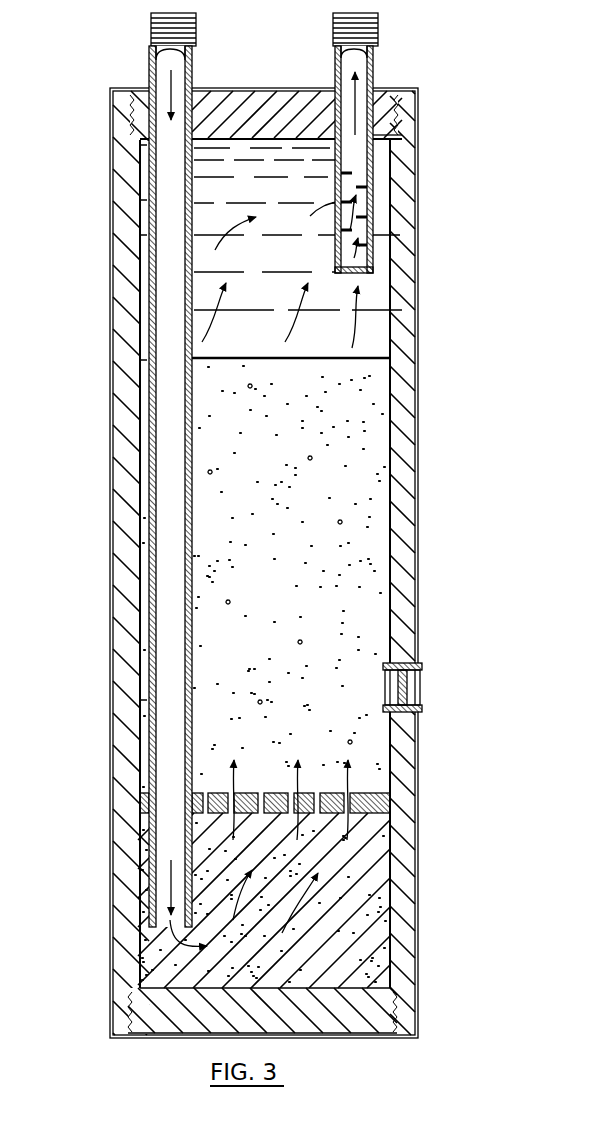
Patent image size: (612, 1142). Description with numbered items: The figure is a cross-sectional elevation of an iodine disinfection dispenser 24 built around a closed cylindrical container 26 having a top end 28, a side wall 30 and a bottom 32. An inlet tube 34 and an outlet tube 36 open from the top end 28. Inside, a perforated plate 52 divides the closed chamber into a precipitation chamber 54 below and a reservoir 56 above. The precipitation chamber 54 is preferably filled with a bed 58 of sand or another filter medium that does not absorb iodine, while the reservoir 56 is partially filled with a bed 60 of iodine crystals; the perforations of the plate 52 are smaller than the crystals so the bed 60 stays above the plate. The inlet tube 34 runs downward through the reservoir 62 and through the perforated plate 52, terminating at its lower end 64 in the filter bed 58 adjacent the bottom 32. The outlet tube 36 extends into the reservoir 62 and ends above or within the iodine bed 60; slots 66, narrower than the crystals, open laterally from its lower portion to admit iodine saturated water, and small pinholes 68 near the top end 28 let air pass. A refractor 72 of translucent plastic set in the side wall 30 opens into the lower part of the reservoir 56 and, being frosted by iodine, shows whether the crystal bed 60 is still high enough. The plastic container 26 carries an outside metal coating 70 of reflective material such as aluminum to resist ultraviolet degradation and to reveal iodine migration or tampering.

The iodine disinfection dispenser 24 is at (419, 470).
The closed cylindrical container 26 is at (406, 586).
The top end 28 is at (273, 100).
The side wall 30 is at (126, 657).
The bottom 32 is at (173, 1013).
The inlet tube 34 is at (153, 76).
The outlet tube 36 is at (374, 78).
The perforated plate 52 is at (380, 793).
The precipitation chamber 54 is at (366, 910).
The bed of sand or filter medium 58 is at (369, 958).
The reservoir 56 is at (363, 547).
The bed of iodine crystals 60 is at (373, 645).
The reservoir 62 is at (383, 323).
The lower end of inlet tube 64 is at (150, 925).
The slots 66 is at (379, 194).
The pinholes 68 is at (401, 124).
The outside metal coating 70 is at (415, 405).
The refractor 72 is at (423, 688).